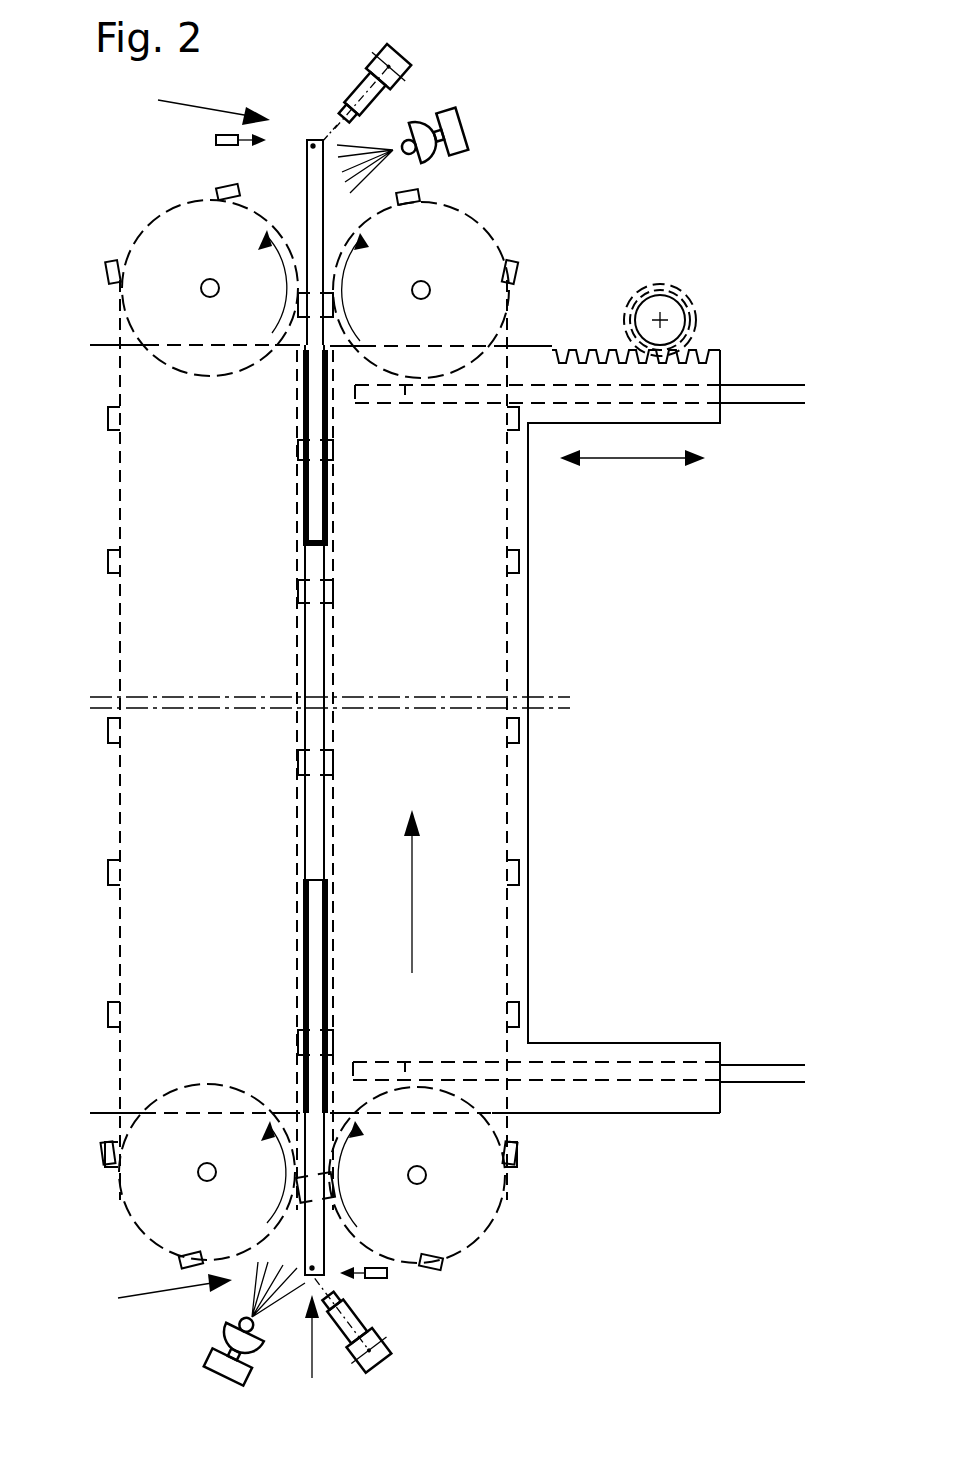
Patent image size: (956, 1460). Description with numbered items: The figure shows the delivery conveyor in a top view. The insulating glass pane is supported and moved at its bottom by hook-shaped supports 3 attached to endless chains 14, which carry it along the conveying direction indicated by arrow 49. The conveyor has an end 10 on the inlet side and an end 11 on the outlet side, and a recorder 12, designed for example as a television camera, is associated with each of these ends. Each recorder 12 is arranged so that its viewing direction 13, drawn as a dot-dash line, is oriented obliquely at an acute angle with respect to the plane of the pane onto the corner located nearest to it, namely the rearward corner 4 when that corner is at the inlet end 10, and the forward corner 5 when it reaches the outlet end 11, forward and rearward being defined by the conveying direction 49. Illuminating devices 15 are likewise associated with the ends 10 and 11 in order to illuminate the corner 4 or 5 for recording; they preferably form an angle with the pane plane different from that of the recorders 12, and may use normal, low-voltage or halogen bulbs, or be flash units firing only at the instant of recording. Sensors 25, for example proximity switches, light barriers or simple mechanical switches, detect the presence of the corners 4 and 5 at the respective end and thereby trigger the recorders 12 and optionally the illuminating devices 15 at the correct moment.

The hook-shaped supports 3 is at (320, 585).
The rearward corner 4 is at (315, 1268).
The forward corner 5 is at (312, 142).
The end on the inlet side 10 is at (155, 1293).
The end on the outlet side 11 is at (195, 107).
The recorder 12 is at (388, 55).
The viewing direction 13 is at (336, 126).
The endless chains 14 is at (120, 596).
The illuminating devices 15 is at (450, 135).
The sensors 25 is at (222, 147).
The conveying direction 49 is at (412, 898).